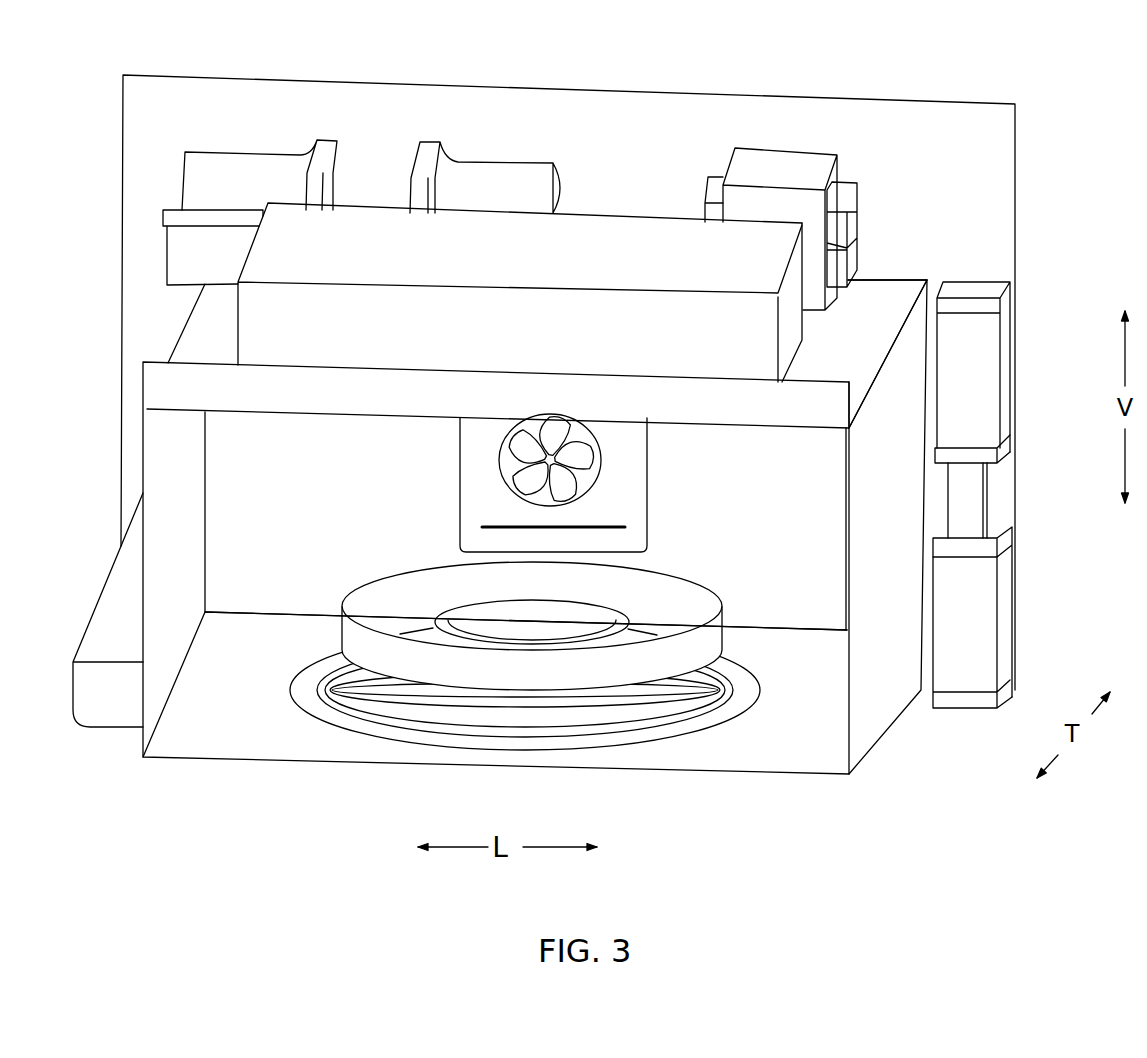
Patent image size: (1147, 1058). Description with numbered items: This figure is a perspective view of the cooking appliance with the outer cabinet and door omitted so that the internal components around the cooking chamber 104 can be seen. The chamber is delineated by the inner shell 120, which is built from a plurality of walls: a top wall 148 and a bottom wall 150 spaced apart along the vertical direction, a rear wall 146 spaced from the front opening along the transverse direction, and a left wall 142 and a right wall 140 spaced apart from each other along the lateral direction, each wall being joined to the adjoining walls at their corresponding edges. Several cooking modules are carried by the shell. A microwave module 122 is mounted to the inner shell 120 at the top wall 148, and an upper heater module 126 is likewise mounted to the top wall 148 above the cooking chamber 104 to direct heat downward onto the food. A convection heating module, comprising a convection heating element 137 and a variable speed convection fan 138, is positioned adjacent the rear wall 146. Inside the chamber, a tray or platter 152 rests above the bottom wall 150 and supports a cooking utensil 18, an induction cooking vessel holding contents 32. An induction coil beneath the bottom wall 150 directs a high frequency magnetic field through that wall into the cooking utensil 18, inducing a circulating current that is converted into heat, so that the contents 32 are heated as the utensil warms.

The cooking utensil 18 is at (358, 640).
The contents 32 is at (583, 628).
The cooking chamber 104 is at (220, 722).
The inner shell 120 is at (880, 293).
The microwave module 122 is at (793, 165).
The upper heater module 126 is at (663, 237).
The convection heating element 137 is at (603, 457).
The convection fan 138 is at (513, 447).
The right wall 140 is at (908, 540).
The left wall 142 is at (197, 543).
The rear wall 146 is at (305, 494).
The top wall 148 is at (870, 347).
The bottom wall 150 is at (808, 666).
The tray or platter 152 is at (337, 647).